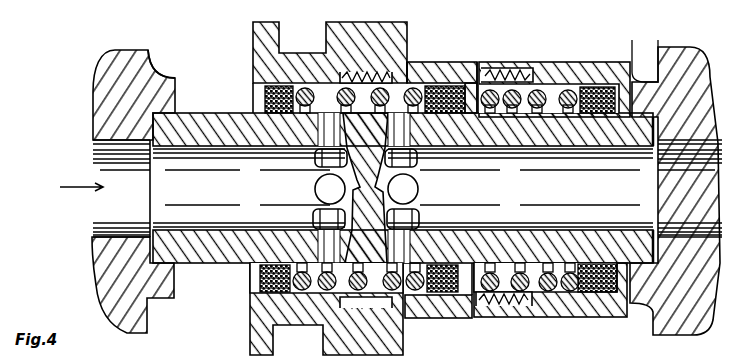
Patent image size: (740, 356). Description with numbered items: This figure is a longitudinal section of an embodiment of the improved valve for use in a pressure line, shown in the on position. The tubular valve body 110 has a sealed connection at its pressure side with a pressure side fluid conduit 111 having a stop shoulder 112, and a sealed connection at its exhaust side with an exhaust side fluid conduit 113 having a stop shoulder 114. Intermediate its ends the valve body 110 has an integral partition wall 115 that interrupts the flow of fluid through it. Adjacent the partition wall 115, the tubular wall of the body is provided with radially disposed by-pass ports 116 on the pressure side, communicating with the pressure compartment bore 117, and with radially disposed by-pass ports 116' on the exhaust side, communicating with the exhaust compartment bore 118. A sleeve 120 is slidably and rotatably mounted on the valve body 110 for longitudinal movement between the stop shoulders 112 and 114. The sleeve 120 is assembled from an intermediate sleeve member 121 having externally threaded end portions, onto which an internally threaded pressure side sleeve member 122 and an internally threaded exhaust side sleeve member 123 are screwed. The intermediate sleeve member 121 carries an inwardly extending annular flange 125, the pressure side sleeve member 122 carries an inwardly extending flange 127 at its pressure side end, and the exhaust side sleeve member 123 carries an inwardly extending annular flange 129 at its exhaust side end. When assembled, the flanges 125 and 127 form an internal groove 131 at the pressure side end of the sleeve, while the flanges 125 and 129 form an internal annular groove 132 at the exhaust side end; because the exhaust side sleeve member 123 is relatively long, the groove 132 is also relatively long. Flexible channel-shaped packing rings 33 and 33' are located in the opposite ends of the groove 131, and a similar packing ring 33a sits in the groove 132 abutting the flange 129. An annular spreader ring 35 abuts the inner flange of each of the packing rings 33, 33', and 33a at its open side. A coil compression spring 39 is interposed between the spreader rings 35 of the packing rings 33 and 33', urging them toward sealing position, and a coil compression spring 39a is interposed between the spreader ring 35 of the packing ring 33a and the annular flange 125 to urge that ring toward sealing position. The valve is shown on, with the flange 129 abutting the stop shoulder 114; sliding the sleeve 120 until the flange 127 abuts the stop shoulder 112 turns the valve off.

The valve body 110 is at (223, 113).
The pressure side fluid conduit 111 is at (155, 35).
The stop shoulder 112 is at (177, 79).
The exhaust side fluid conduit 113 is at (683, 55).
The stop shoulder 114 is at (634, 57).
The partition wall 115 is at (368, 197).
The by-pass ports 116 is at (312, 188).
The by-pass ports 116' is at (425, 188).
The pressure compartment bore 117 is at (219, 188).
The exhaust compartment bore 118 is at (555, 188).
The sleeve 120 is at (440, 62).
The intermediate sleeve member 121 is at (470, 62).
The pressure side sleeve member 122 is at (332, 36).
The exhaust side sleeve member 123 is at (602, 38).
The annular flange 125 is at (467, 112).
The flange 127 is at (250, 283).
The annular flange 129 is at (623, 270).
The internal groove 131 is at (335, 287).
The internal annular groove 132 is at (532, 290).
The packing ring 33 is at (271, 248).
The packing ring 33' is at (466, 249).
The packing ring 33a is at (597, 263).
The spreader ring 35 is at (305, 112).
The coil compression spring 39 is at (380, 304).
The coil compression spring 39a is at (507, 77).